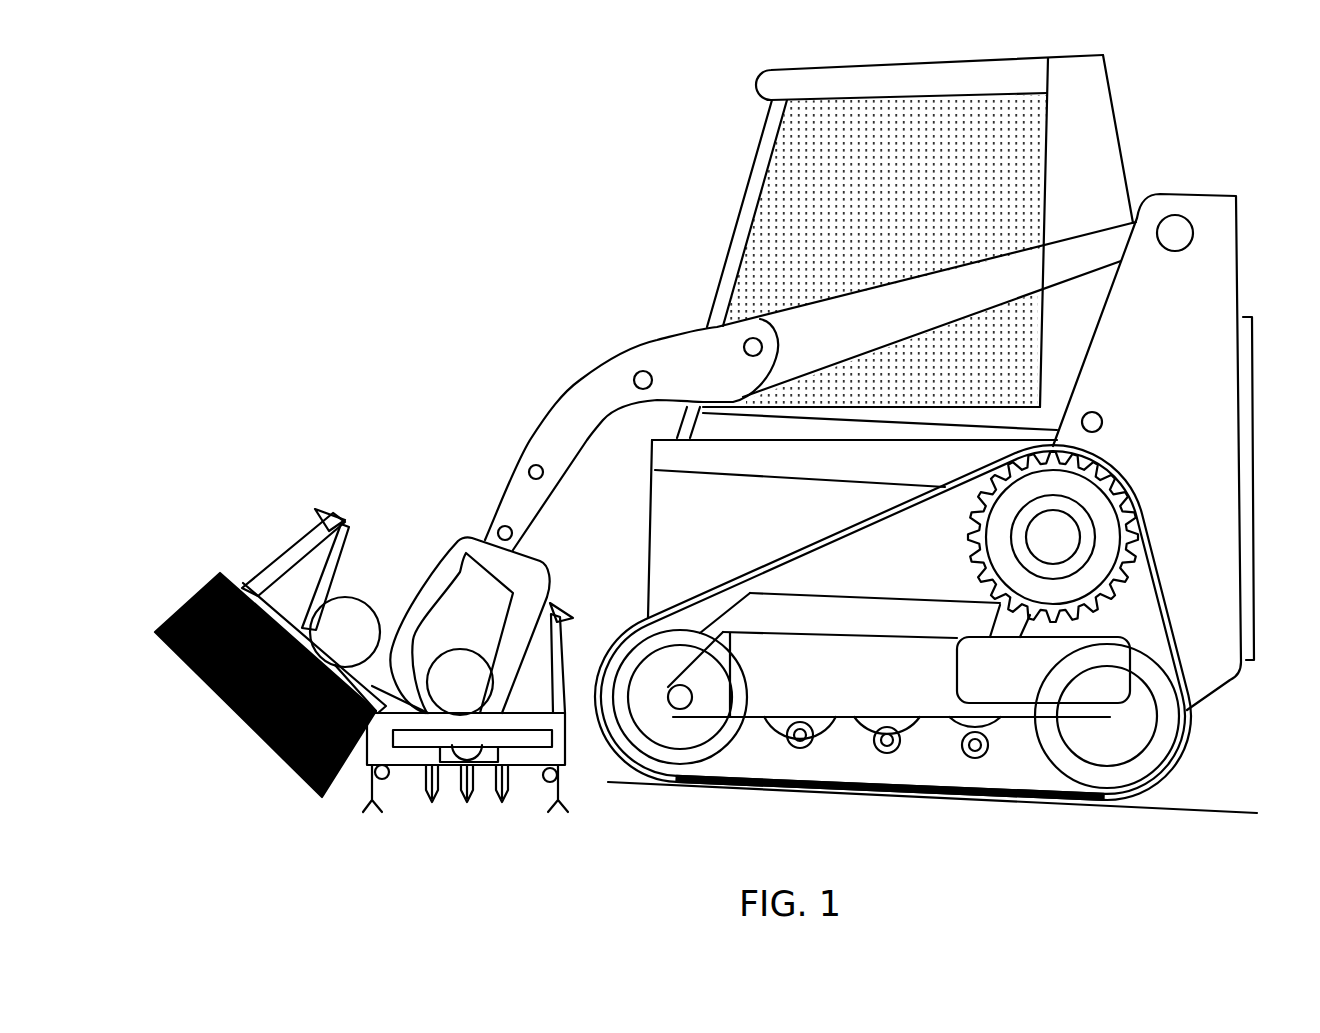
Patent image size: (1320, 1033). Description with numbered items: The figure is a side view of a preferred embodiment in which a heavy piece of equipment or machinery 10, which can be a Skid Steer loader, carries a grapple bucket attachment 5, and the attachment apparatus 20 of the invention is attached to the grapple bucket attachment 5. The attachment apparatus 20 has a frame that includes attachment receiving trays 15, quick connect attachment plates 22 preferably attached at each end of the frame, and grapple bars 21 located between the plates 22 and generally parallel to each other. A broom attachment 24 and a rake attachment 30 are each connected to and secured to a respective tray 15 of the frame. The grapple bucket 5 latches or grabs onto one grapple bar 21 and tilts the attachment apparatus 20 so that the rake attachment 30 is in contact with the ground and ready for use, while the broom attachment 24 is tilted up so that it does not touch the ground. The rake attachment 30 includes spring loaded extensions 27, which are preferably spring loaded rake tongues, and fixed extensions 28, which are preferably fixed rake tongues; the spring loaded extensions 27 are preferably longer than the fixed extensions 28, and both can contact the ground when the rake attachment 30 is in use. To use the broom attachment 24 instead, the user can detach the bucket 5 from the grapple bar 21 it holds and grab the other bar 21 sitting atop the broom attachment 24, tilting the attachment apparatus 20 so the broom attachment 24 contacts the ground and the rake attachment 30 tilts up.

The heavy piece of equipment or machinery 10 is at (1201, 272).
The attachment apparatus 20 is at (377, 639).
The grapple bucket attachment 5 is at (464, 540).
The quick connect attachment plates 22 is at (288, 552).
The broom attachment 24 is at (183, 582).
The grapple bars 21 is at (333, 651).
The spring loaded rake tongues 27 is at (372, 797).
The fixed rake tongues 28 is at (434, 800).
The attachment receiving tray 15 is at (563, 758).
The rake attachment 30 is at (606, 792).